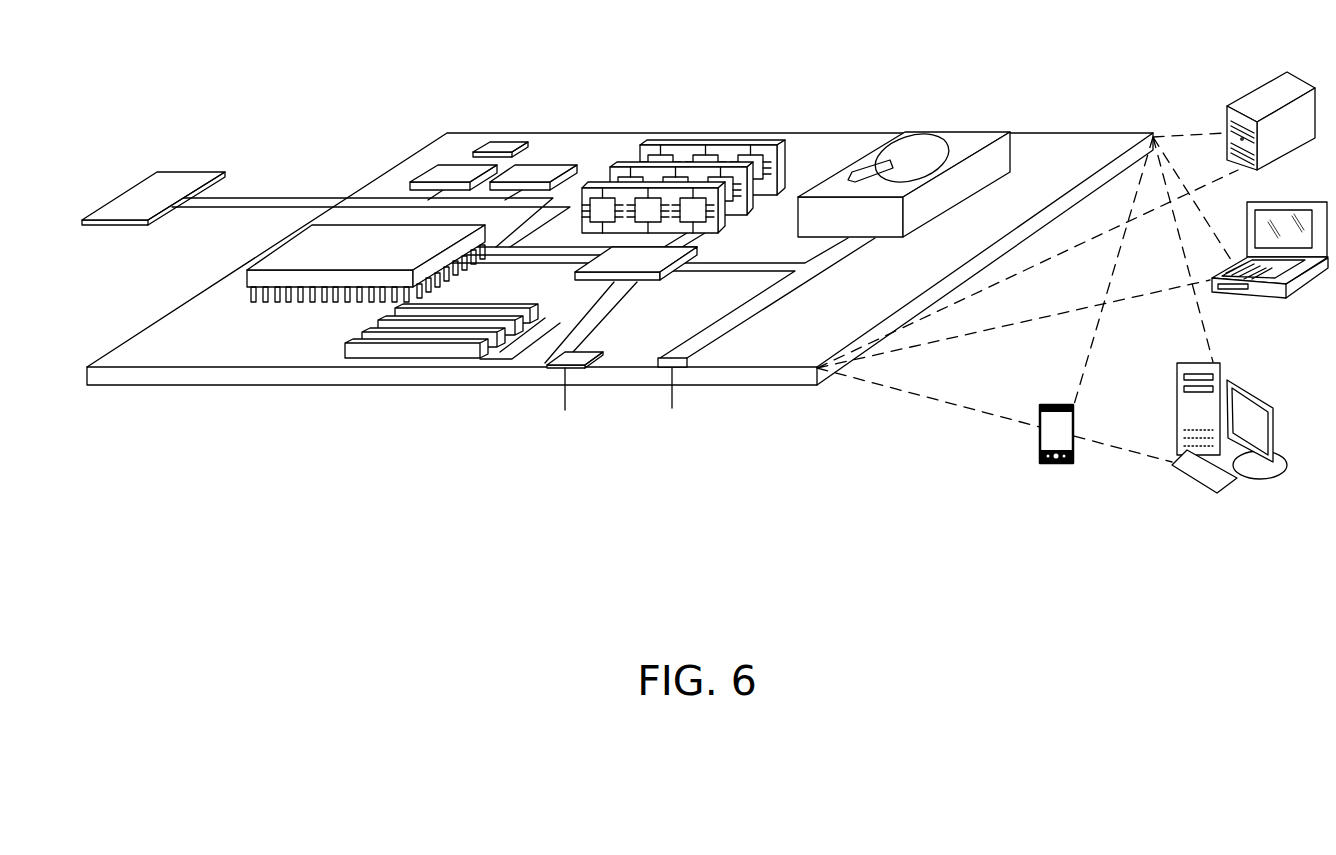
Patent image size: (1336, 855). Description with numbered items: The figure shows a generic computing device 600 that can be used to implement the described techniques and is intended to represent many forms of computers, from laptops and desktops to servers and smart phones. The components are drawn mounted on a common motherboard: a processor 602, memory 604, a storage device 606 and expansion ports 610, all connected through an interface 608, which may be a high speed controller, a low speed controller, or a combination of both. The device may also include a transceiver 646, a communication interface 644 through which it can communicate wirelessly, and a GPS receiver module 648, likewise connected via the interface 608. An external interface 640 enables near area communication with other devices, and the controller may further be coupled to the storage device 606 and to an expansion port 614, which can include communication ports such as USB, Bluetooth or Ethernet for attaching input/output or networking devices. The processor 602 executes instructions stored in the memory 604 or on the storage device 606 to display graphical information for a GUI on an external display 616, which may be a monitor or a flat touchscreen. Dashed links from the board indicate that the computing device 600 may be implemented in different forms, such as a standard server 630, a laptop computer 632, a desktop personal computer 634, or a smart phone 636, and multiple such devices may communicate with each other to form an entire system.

The computing device 600 is at (380, 100).
The processor 602 is at (272, 250).
The memory 604 is at (714, 145).
The storage device 606 is at (947, 123).
The interface 608 is at (607, 267).
The expansion ports 610 is at (368, 327).
The expansion port 614 is at (692, 363).
The display 616 is at (181, 183).
The standard server 630 is at (1250, 98).
The laptop computer 632 is at (1300, 200).
The desktop computer 634 is at (1267, 382).
The smart phone 636 is at (1050, 463).
The external interface 640 is at (587, 353).
The communication interface 644 is at (452, 165).
The transceiver 646 is at (500, 145).
The GPS receiver module 648 is at (538, 165).